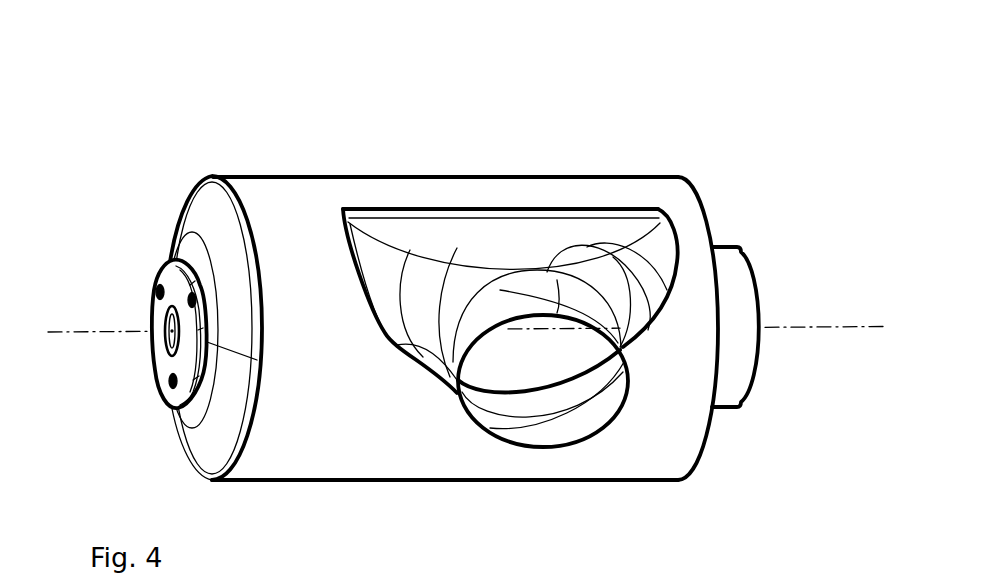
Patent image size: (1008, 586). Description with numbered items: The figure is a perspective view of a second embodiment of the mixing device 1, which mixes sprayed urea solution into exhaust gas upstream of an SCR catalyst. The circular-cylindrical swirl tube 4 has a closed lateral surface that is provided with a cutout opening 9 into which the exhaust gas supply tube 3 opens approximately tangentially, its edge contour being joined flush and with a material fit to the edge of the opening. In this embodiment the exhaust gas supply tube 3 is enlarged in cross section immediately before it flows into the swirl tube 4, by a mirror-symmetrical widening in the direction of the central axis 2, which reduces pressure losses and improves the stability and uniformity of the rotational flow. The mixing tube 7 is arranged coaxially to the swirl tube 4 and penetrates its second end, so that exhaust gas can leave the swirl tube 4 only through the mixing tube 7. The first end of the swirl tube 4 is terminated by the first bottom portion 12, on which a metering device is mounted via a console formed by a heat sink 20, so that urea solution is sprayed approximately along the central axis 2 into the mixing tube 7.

The mixing device 1 is at (438, 286).
The central axis 2 is at (85, 333).
The exhaust gas supply tube 3 is at (515, 233).
The swirl tube 4 is at (307, 183).
The mixing tube 7 is at (743, 272).
The cutout opening 9 is at (523, 360).
The first bottom portion 12 is at (193, 213).
The heat sink 20 is at (165, 273).